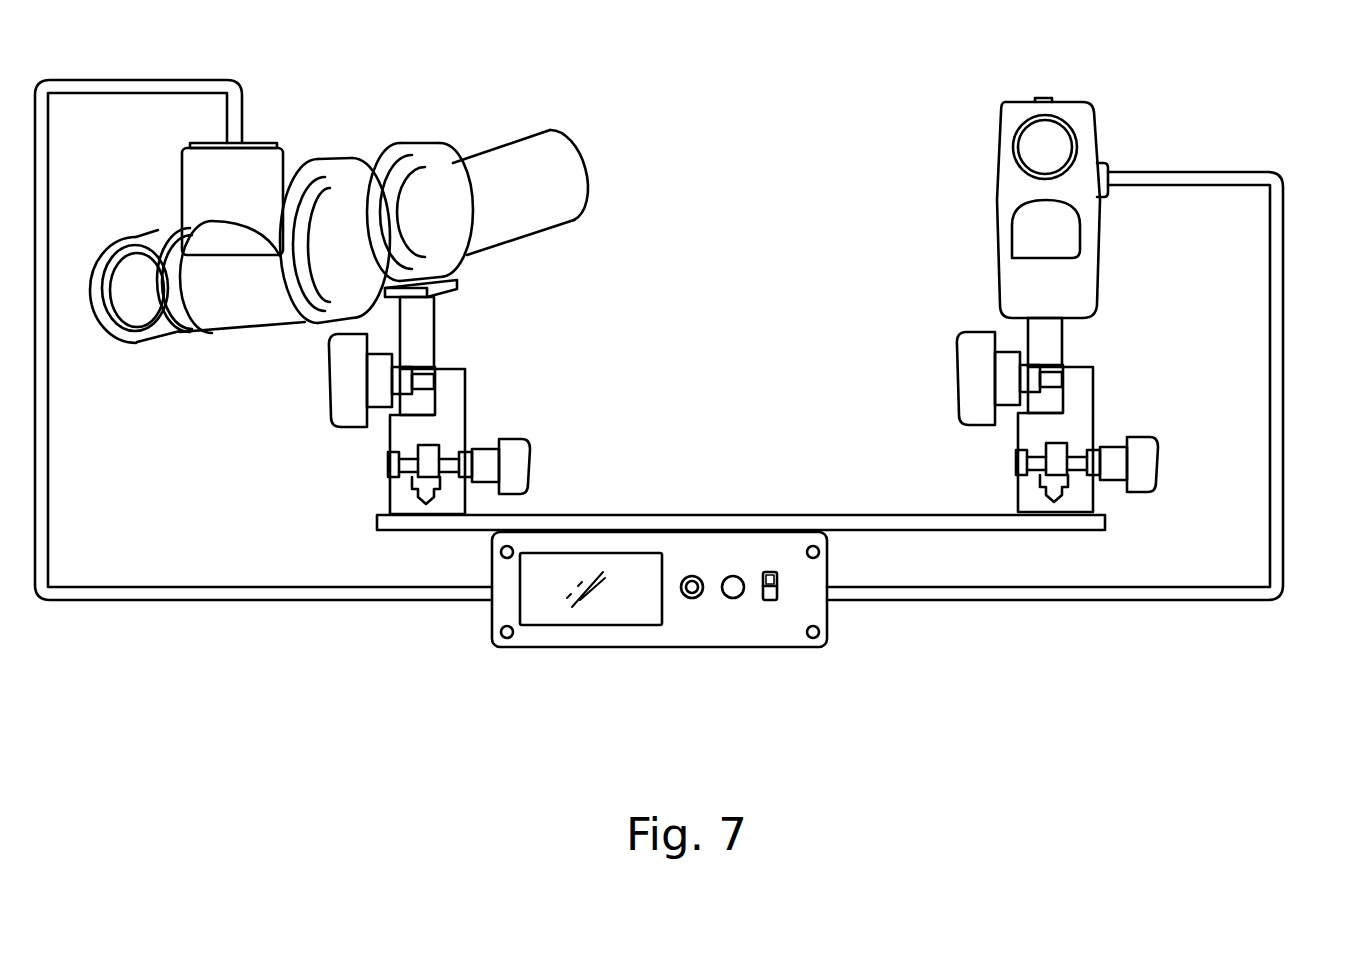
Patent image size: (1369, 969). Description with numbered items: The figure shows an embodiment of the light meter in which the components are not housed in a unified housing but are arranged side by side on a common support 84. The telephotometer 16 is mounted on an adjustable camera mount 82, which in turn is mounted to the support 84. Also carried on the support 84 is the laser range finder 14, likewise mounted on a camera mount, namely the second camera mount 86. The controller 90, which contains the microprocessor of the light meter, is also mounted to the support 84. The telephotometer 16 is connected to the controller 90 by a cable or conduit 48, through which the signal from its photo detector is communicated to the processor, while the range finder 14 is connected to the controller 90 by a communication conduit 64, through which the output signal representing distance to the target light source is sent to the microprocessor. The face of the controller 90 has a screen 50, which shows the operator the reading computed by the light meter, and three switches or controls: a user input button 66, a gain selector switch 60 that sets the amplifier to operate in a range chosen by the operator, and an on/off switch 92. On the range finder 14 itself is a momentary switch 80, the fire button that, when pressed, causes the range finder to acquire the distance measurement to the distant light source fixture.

The range finder 14 is at (1012, 187).
The telephotometer 16 is at (320, 158).
The cable or conduit 48 is at (172, 600).
The screen 50 is at (616, 607).
The gain selector switch 60 is at (733, 600).
The communication conduit 64 is at (1283, 512).
The user input button 66 is at (692, 600).
The momentary switch 80 is at (1045, 99).
The adjustable camera mount 82 is at (464, 404).
The support 84 is at (718, 515).
The second camera mount 86 is at (1093, 398).
The controller 90 is at (695, 619).
The on/off switch 92 is at (780, 603).